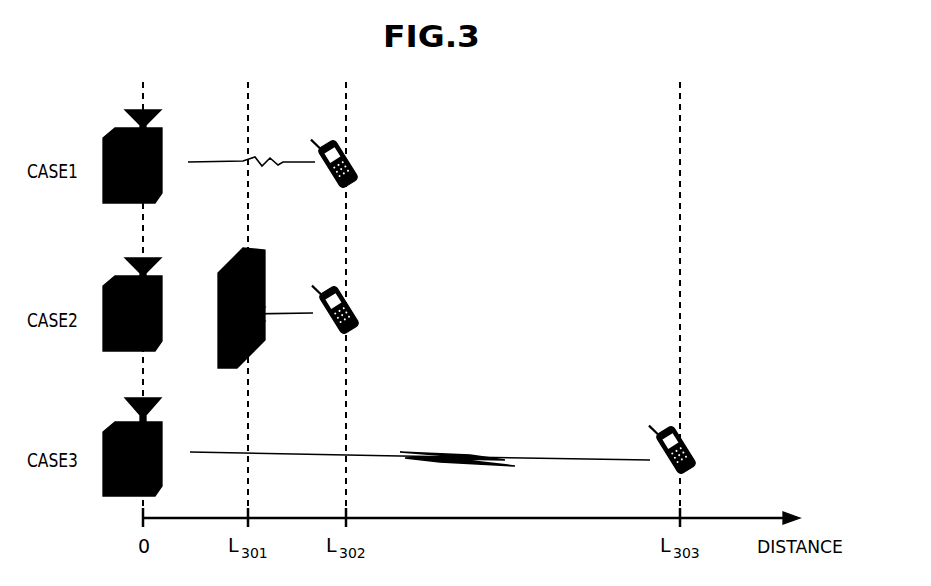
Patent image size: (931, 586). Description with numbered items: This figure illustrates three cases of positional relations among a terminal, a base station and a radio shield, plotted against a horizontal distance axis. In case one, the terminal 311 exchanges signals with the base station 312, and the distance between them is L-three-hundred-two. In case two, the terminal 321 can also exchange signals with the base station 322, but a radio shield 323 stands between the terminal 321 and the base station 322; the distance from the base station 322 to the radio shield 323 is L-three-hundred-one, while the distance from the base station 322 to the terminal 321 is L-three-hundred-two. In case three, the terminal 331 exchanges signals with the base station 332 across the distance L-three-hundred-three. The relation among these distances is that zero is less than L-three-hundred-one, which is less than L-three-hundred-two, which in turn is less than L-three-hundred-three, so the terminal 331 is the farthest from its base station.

The terminal 311 is at (345, 146).
The base station 312 is at (163, 130).
The terminal 321 is at (345, 291).
The base station 322 is at (163, 277).
The radio shield 323 is at (248, 250).
The terminal 331 is at (675, 427).
The base station 332 is at (162, 422).